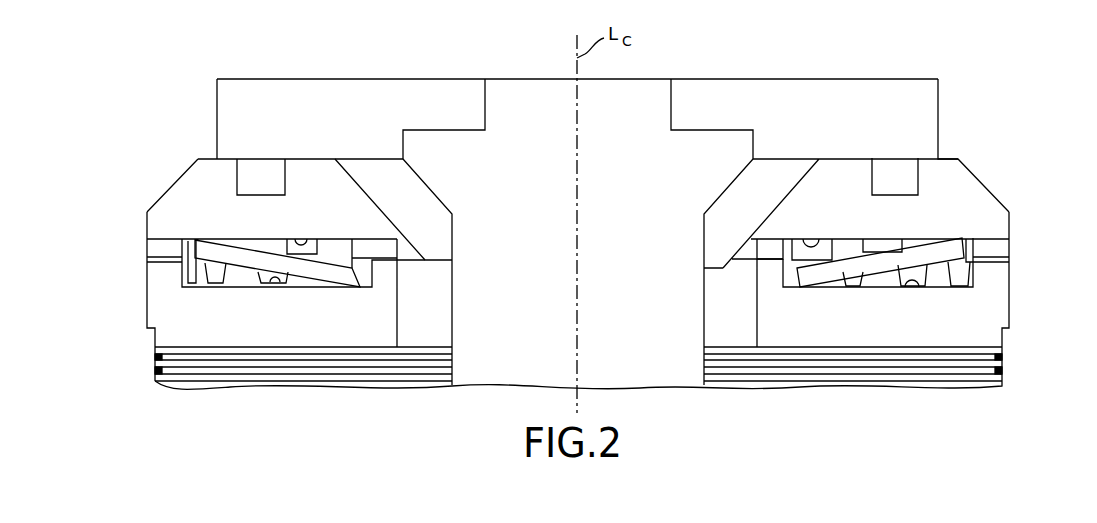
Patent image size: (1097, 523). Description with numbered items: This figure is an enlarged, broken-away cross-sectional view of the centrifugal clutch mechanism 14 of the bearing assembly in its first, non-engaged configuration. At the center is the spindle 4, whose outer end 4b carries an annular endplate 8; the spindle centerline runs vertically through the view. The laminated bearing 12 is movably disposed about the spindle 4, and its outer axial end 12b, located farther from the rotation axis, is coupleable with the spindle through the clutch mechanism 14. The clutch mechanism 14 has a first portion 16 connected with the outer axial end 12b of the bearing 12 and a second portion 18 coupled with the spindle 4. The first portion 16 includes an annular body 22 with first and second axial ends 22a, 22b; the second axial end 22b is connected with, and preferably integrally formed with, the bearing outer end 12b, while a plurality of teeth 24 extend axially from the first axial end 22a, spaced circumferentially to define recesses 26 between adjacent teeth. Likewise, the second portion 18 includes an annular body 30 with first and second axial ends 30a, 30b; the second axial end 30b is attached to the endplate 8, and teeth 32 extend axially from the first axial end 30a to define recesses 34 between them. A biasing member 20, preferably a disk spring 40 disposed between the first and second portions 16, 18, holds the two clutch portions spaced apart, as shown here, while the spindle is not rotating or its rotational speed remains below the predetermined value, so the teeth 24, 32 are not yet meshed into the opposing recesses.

The spindle 4 is at (628, 113).
The outer end 4b is at (527, 80).
The annular endplate 8 is at (838, 102).
The laminated bearing 12 is at (130, 371).
The outer axial end 12b is at (975, 347).
The centrifugal clutch mechanism 14 is at (125, 133).
The first portion 16 is at (129, 295).
The second portion 18 is at (134, 198).
The biasing member 20 is at (845, 268).
The annular body 22 is at (1008, 308).
The first axial end 22a is at (243, 288).
The second axial end 22b is at (205, 338).
The teeth 24 is at (237, 273).
The recesses 26 is at (283, 282).
The annular body 30 is at (989, 191).
The first axial end 30a is at (330, 240).
The second axial end 30b is at (210, 158).
The teeth 32 is at (343, 250).
The recesses 34 is at (312, 240).
The disk spring 40 is at (940, 243).